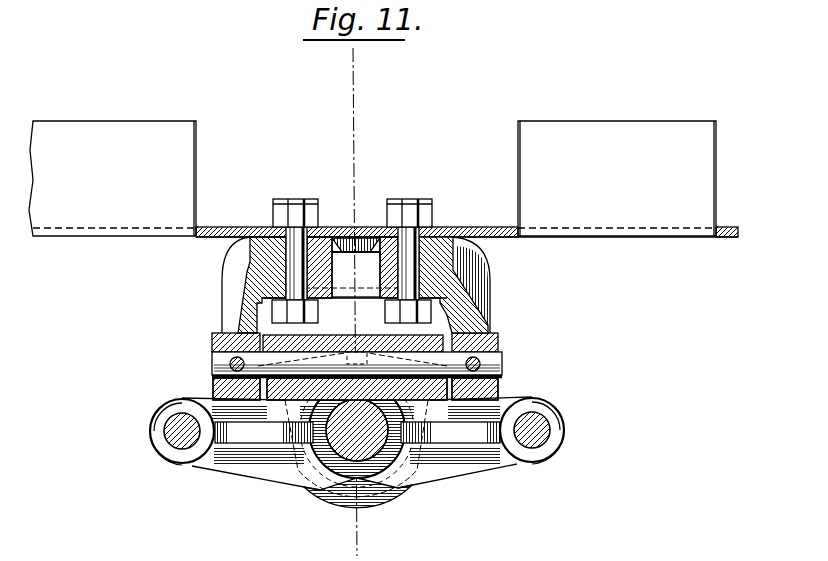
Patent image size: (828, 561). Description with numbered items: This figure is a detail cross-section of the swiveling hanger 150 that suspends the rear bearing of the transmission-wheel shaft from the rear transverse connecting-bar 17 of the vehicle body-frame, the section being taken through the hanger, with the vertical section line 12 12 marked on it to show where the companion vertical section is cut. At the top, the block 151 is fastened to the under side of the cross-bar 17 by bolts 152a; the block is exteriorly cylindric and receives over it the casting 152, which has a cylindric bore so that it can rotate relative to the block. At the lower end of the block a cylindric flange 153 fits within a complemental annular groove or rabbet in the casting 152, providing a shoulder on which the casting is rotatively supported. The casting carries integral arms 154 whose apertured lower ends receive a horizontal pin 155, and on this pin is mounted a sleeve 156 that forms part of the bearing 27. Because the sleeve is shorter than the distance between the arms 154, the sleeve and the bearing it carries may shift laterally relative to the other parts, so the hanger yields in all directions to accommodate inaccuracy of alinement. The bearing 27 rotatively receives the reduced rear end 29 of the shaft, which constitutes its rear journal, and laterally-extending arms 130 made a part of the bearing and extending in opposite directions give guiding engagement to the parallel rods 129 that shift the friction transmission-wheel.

The section line 12 is at (314, 80).
The transverse connecting-bar 17 is at (372, 178).
The bearing 27 is at (417, 460).
The reduced rear end of the shaft 29 is at (316, 462).
The rod 129 is at (180, 433).
The laterally-extending arm 130 is at (349, 443).
The hanger 150 is at (389, 336).
The block 151 is at (278, 257).
The casting 152 is at (456, 271).
The bolt 152a is at (305, 196).
The cylindric flange 153 is at (264, 304).
The integral arm 154 is at (237, 283).
The horizontal pin 155 is at (503, 355).
The sleeve 156 is at (371, 350).